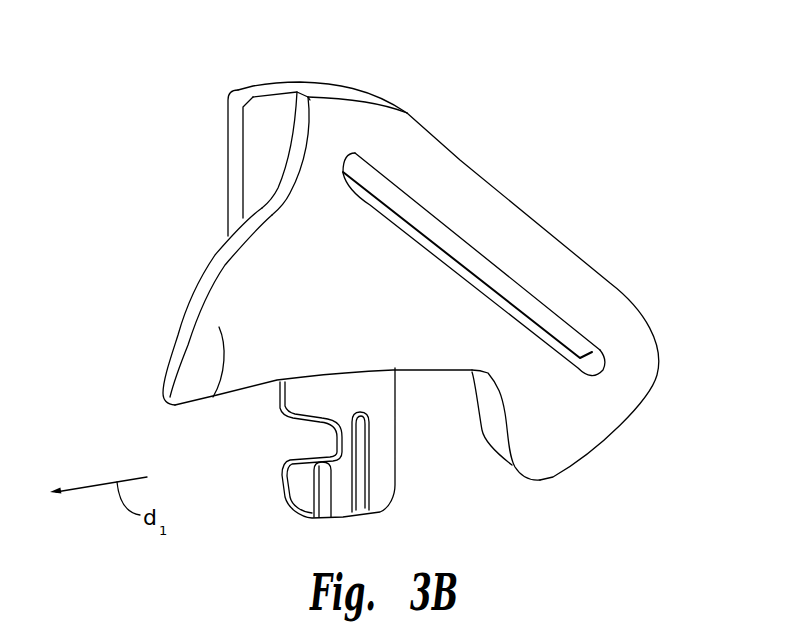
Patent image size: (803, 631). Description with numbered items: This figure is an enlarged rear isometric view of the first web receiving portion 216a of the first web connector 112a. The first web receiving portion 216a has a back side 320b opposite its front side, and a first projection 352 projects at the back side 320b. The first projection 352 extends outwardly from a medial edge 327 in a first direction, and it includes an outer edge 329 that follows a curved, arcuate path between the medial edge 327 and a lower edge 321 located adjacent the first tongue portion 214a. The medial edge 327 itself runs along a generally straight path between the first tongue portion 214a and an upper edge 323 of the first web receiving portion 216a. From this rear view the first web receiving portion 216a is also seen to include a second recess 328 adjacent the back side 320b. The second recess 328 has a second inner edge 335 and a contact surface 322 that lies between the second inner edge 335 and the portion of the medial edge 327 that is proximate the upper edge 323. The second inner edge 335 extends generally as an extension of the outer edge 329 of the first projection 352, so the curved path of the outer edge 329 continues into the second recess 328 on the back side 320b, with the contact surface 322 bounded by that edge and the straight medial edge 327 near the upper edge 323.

The first web connector 112a is at (508, 155).
The first tongue portion 214a is at (387, 472).
The first web receiving portion 216a is at (607, 420).
The back side 320b is at (522, 257).
The lower edge 321 is at (268, 383).
The contact surface 322 is at (283, 141).
The upper edge 323 is at (258, 104).
The medial edge 327 is at (237, 125).
The second recess 328 is at (250, 108).
The outer edge 329 is at (220, 273).
The second inner edge 335 is at (300, 150).
The first projection 352 is at (213, 397).